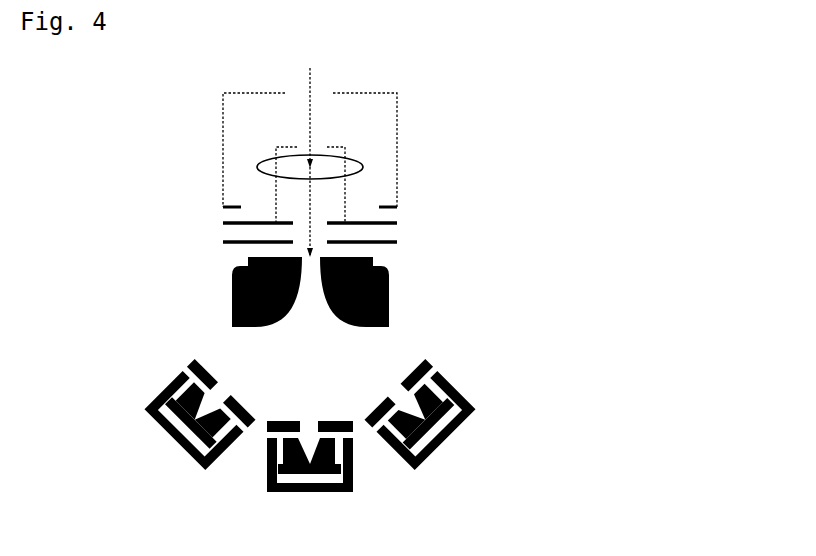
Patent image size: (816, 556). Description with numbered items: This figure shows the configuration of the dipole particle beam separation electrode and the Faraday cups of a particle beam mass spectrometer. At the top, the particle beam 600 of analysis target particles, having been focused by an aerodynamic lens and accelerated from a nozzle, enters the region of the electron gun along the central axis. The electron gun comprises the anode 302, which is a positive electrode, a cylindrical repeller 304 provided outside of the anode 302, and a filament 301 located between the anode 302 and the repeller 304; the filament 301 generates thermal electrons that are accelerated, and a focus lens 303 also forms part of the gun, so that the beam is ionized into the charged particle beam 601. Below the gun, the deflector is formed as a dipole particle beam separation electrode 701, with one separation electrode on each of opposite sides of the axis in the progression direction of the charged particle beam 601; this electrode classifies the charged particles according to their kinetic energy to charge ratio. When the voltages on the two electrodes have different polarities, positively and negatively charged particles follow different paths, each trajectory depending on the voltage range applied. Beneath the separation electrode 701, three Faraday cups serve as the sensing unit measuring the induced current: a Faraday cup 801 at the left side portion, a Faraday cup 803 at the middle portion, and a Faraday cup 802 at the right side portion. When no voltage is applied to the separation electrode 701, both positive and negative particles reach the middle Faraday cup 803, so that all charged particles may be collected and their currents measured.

The filament 301 is at (372, 167).
The anode 302 is at (214, 223).
The focus lens 303 is at (214, 242).
The repeller 304 is at (232, 88).
The particle beam 600 is at (318, 82).
The charged particle beam 601 is at (326, 245).
The dipole particle beam separation electrode 701 is at (398, 300).
The Faraday cup 801 is at (170, 446).
The Faraday cup 802 is at (462, 447).
The Faraday cup 803 is at (285, 499).